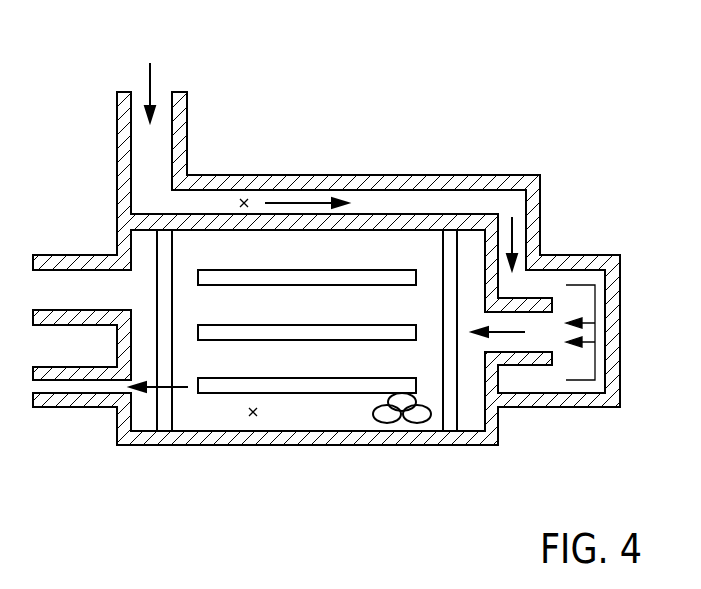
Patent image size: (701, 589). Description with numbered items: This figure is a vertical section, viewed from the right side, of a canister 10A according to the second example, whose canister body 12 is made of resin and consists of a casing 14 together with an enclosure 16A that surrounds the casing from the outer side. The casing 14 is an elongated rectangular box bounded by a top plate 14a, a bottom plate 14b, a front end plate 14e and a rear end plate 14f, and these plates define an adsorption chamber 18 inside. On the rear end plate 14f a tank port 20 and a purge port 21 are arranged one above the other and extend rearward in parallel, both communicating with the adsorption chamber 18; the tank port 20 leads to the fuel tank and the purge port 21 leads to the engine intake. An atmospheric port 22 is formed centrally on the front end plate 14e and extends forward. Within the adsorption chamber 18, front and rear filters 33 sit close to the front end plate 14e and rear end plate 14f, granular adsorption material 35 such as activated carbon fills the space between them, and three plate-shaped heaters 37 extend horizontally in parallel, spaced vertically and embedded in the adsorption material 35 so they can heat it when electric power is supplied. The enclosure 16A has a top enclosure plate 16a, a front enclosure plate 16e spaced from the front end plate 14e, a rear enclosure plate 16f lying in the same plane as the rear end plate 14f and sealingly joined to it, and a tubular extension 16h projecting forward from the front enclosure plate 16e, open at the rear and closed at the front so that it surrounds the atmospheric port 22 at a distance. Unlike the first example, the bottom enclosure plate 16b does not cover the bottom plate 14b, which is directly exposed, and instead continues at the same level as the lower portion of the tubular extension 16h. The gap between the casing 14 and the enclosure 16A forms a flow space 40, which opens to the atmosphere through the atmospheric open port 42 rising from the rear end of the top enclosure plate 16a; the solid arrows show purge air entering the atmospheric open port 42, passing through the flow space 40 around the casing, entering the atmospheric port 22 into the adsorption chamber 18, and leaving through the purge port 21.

The canister 10A is at (467, 95).
The canister body 12 is at (413, 150).
The casing 14 is at (113, 233).
The top plate 14a is at (210, 223).
The bottom plate 14b is at (223, 443).
The front end plate 14e is at (490, 412).
The rear end plate 14f is at (122, 417).
The enclosure 16A is at (370, 173).
The top enclosure plate 16a is at (302, 182).
The bottom enclosure plate 16b is at (533, 400).
The front enclosure plate 16e is at (532, 213).
The rear enclosure plate 16f is at (122, 200).
The tubular extension 16h is at (578, 400).
The adsorption chamber 18 is at (255, 416).
The tank port 20 is at (53, 255).
The purge port 21 is at (58, 400).
The atmospheric port 22 is at (537, 305).
The filters 33 is at (165, 432).
The adsorption material 35 is at (387, 414).
The heaters 37 is at (405, 275).
The flow space 40 is at (245, 200).
The atmospheric open port 42 is at (122, 120).